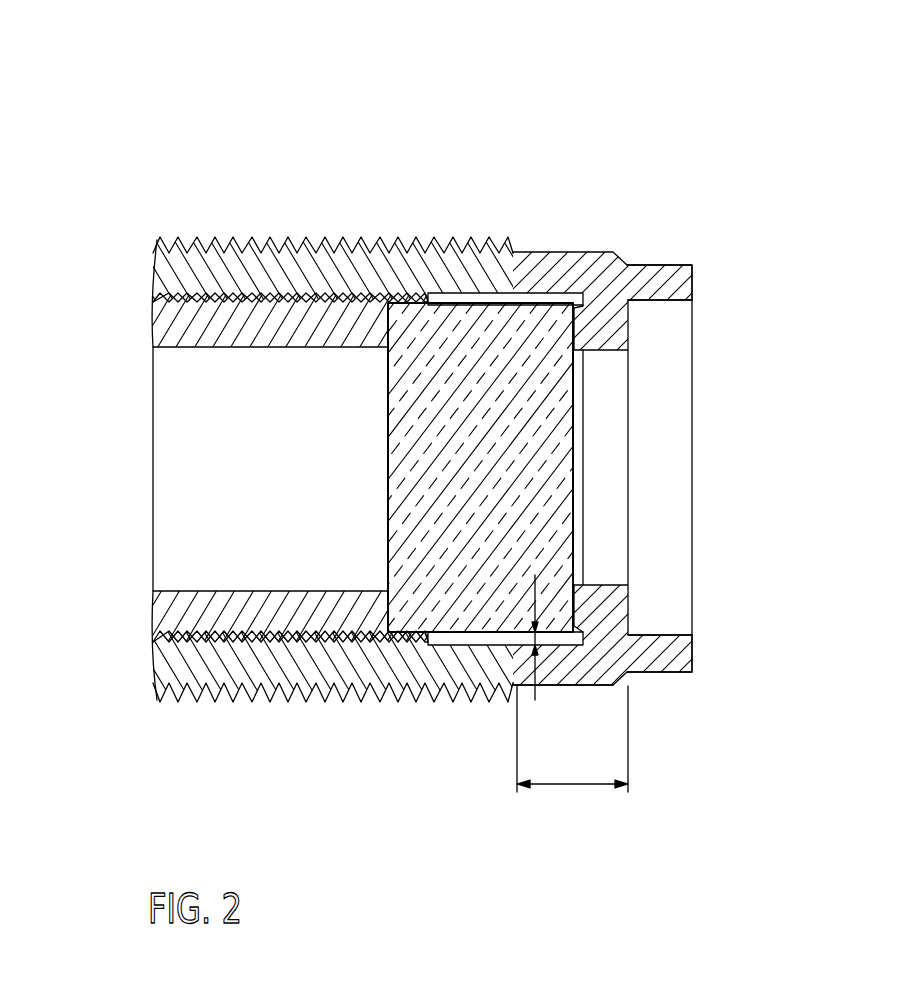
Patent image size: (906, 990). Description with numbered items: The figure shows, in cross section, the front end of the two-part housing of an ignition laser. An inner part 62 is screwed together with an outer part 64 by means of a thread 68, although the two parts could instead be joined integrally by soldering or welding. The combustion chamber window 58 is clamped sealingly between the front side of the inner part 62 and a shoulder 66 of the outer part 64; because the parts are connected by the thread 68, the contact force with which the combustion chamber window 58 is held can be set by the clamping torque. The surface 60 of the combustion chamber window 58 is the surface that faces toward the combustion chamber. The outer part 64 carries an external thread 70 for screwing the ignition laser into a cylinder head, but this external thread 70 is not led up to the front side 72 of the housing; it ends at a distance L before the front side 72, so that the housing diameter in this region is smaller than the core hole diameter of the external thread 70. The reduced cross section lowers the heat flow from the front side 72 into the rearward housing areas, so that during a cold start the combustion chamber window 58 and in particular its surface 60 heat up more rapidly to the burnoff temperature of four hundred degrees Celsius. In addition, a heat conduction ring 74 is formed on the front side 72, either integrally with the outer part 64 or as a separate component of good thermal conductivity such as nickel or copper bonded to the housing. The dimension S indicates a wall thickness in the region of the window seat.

The combustion chamber window 58 is at (432, 432).
The surface of the combustion chamber window 60 is at (576, 493).
The inner part 62 is at (453, 490).
The outer part 64 is at (278, 668).
The shoulder 66 is at (577, 331).
The thread 68 is at (275, 297).
The external thread 70 is at (417, 693).
The front side 72 is at (630, 623).
The heat conduction ring 74 is at (664, 283).
The wall thickness S is at (547, 646).
The distance L is at (572, 790).